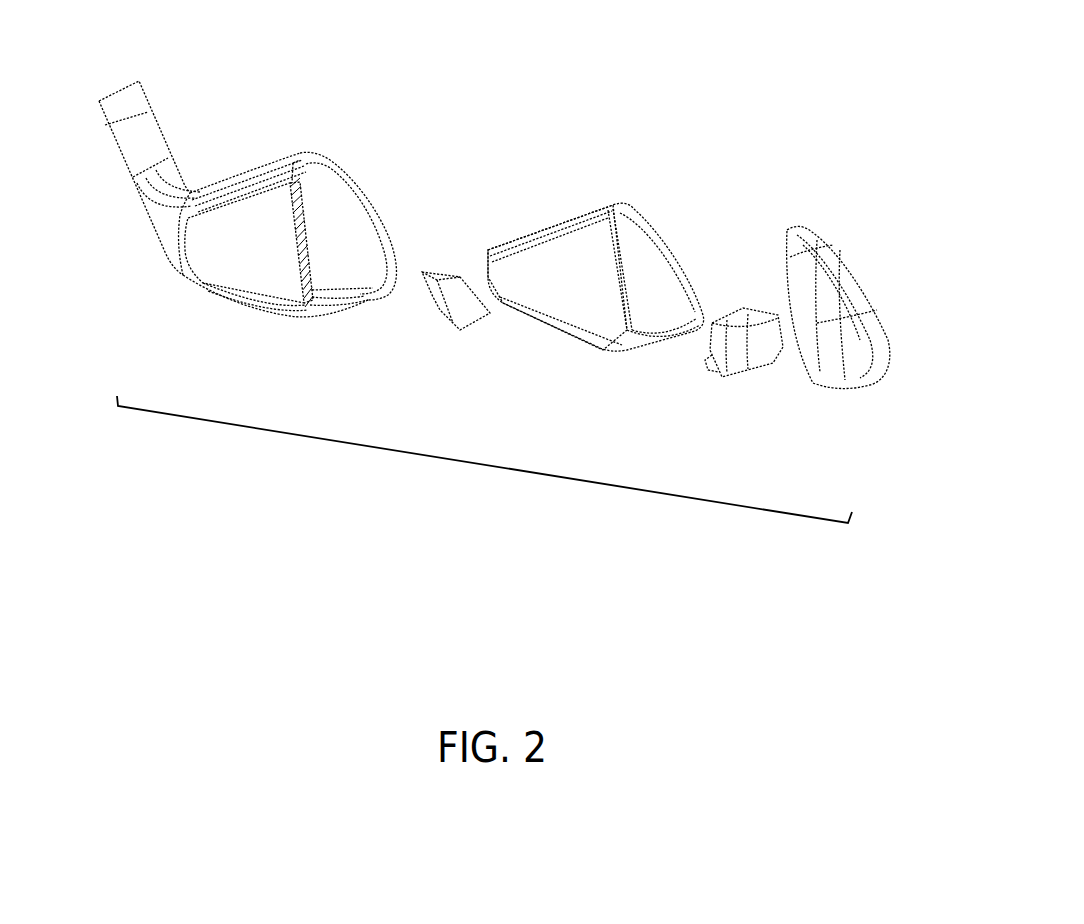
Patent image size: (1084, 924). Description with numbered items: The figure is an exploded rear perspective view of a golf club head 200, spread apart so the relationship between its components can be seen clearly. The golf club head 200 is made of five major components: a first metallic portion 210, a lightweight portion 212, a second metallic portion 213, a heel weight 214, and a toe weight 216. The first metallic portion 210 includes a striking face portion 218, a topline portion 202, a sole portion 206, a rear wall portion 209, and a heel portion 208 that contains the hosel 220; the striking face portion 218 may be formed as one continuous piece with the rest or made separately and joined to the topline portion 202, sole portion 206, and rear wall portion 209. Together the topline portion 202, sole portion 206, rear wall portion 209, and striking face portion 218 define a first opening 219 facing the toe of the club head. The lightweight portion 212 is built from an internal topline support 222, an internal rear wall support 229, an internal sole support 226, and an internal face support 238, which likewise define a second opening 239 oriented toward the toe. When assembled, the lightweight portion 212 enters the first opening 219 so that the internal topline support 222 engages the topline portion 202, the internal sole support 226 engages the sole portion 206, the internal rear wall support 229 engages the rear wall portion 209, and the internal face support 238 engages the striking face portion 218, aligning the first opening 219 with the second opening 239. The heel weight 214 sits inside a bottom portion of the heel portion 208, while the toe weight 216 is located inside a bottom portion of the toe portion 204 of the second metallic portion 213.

The golf club head 200 is at (482, 464).
The topline portion 202 is at (235, 172).
The toe portion 204 is at (877, 311).
The sole portion 206 is at (258, 308).
The heel portion 208 is at (180, 270).
The rear wall portion 209 is at (236, 262).
The first metallic portion 210 is at (112, 65).
The lightweight portion 212 is at (650, 155).
The second metallic portion 213 is at (833, 230).
The heel weight 214 is at (440, 310).
The toe weight 216 is at (725, 370).
The striking face portion 218 is at (360, 190).
The first opening 219 is at (366, 262).
The hosel 220 is at (131, 148).
The internal topline support 222 is at (583, 215).
The internal sole support 226 is at (600, 350).
The internal rear wall support 229 is at (556, 299).
The internal face support 238 is at (675, 245).
The second opening 239 is at (660, 298).